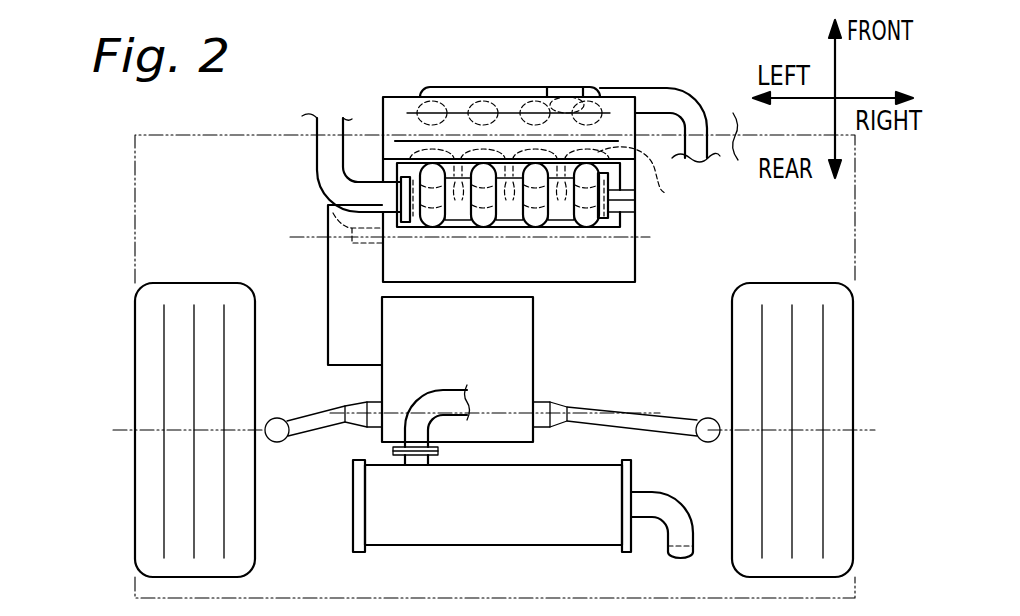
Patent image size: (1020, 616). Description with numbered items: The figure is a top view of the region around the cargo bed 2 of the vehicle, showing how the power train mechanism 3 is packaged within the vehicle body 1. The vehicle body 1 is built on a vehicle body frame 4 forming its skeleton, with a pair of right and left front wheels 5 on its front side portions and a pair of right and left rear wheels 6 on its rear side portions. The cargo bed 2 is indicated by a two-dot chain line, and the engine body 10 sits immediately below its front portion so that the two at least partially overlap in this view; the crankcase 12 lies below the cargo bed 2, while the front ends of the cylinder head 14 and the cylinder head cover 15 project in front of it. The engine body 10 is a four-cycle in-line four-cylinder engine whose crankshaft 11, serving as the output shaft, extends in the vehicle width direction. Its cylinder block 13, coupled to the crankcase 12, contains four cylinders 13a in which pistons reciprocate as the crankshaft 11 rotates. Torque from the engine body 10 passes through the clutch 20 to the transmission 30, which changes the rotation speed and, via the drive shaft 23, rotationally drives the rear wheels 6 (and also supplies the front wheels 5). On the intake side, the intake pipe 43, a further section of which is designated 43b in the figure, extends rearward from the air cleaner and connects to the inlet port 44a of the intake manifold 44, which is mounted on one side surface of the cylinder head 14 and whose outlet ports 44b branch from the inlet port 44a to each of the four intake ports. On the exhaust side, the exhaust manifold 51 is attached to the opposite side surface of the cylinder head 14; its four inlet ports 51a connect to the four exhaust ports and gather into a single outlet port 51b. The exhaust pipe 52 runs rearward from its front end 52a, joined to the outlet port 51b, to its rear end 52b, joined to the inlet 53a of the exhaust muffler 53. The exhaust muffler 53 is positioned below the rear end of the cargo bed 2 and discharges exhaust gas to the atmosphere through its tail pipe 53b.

The vehicle body 1 is at (305, 238).
The cargo bed 2 is at (133, 205).
The power train mechanism 3 is at (255, 218).
The vehicle body frame 4 is at (508, 412).
The front wheels 5 is at (125, 433).
The rear wheels 6 is at (148, 372).
The engine body 10 is at (695, 173).
The crankshaft 11 is at (345, 217).
The crankcase 12 is at (600, 282).
The cylinder block 13 is at (642, 206).
The cylinders 13a is at (652, 177).
The cylinder head 14 is at (642, 190).
The cylinder head cover 15 is at (397, 97).
The clutch 20 is at (340, 302).
The drive shaft 23 is at (312, 410).
The transmission 30 is at (446, 374).
The intake pipe 43 is at (317, 152).
The exhaust pipe horizontal section 43b is at (392, 197).
The intake manifold 44 is at (512, 228).
The inlet port 44a is at (413, 222).
The outlet port 44b is at (588, 228).
The exhaust manifold 51 is at (437, 88).
The inlet ports 51a is at (478, 108).
The outlet port 51b is at (568, 90).
The exhaust pipe 52 is at (690, 110).
The front end 52a is at (600, 92).
The rear end 52b is at (400, 437).
The exhaust muffler 53 is at (476, 515).
The inlet 53a is at (395, 462).
The tail pipe 53b is at (690, 530).